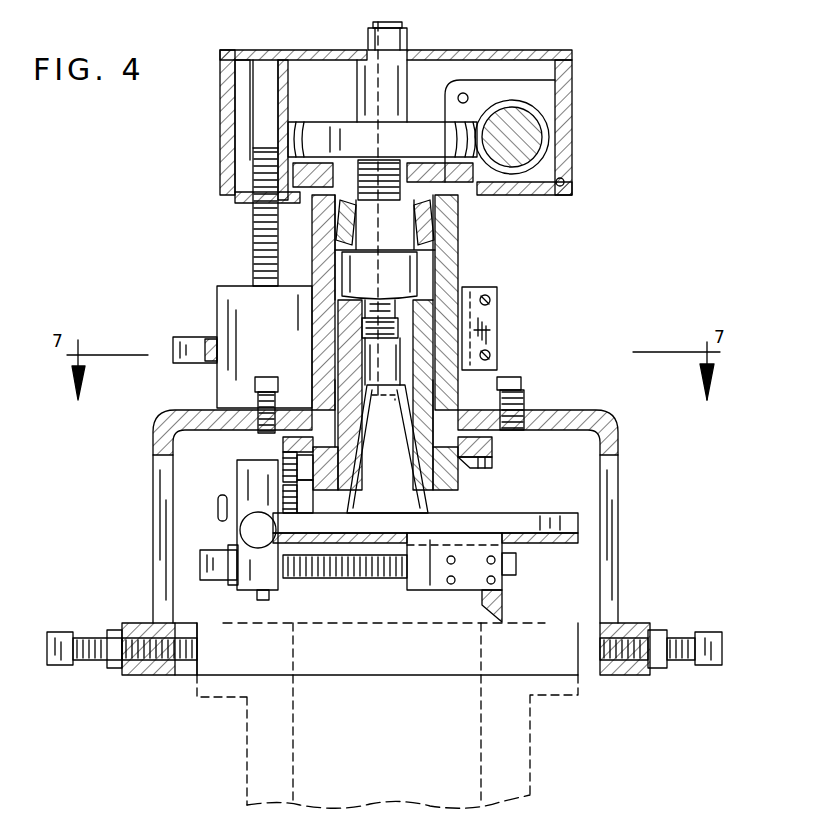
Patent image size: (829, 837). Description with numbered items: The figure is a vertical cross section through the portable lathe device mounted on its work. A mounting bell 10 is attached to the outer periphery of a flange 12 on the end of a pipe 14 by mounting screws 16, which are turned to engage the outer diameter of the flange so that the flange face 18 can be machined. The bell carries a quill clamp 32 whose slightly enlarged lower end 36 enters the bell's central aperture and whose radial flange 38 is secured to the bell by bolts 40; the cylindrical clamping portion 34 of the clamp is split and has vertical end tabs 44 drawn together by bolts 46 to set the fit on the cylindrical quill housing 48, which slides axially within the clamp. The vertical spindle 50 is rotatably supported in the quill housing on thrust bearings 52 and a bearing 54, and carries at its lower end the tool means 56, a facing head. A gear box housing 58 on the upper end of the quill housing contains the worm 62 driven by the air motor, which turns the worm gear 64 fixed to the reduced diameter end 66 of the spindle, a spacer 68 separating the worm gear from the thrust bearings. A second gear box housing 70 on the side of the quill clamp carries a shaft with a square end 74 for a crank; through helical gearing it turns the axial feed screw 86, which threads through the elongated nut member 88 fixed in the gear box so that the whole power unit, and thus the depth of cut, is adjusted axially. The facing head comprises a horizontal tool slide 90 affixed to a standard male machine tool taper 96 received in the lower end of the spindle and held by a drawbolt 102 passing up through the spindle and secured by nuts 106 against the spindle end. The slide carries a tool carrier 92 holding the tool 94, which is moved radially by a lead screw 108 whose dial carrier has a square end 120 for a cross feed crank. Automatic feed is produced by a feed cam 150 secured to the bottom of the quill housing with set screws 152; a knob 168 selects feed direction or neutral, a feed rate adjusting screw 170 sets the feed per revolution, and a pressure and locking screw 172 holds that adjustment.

The mounting bell 10 is at (620, 441).
The flange 12 is at (212, 697).
The pipe 14 is at (535, 762).
The mounting screws 16 is at (92, 636).
The flange face 18 is at (537, 623).
The quill clamp 32 is at (508, 303).
The cylindrical clamping portion 34 is at (487, 330).
The enlarged lower end 36 is at (476, 422).
The radial flange 38 is at (526, 399).
The bolts 40 is at (519, 381).
The vertical end tabs 44 is at (496, 323).
The bolts 46 is at (490, 300).
The quill housing 48 is at (460, 246).
The spindle 50 is at (418, 276).
The thrust bearings 52 is at (440, 224).
The bearing 54 is at (300, 390).
The tool means 56 is at (535, 500).
The gear box housing 58 is at (468, 50).
The worm 62 is at (549, 137).
The worm gear 64 is at (418, 128).
The reduced diameter end 66 is at (356, 80).
The spacer 68 is at (332, 172).
The second gear box housing 70 is at (231, 300).
The square end 74 is at (185, 340).
The axial feed screw 86 is at (255, 241).
The elongated nut member 88 is at (235, 160).
The tool slide 90 is at (523, 513).
The tool carrier 92 is at (416, 575).
The tool 94 is at (485, 613).
The machine tool taper 96 is at (387, 425).
The drawbolt 102 is at (364, 330).
The nuts 106 is at (370, 47).
The lead screw 108 is at (334, 580).
The square end 120 is at (200, 564).
The feed cam 150 is at (283, 443).
The set screws 152 is at (477, 458).
The knob 168 is at (220, 512).
The feed rate adjusting screw 170 is at (258, 512).
The pressure and locking screw 172 is at (262, 600).